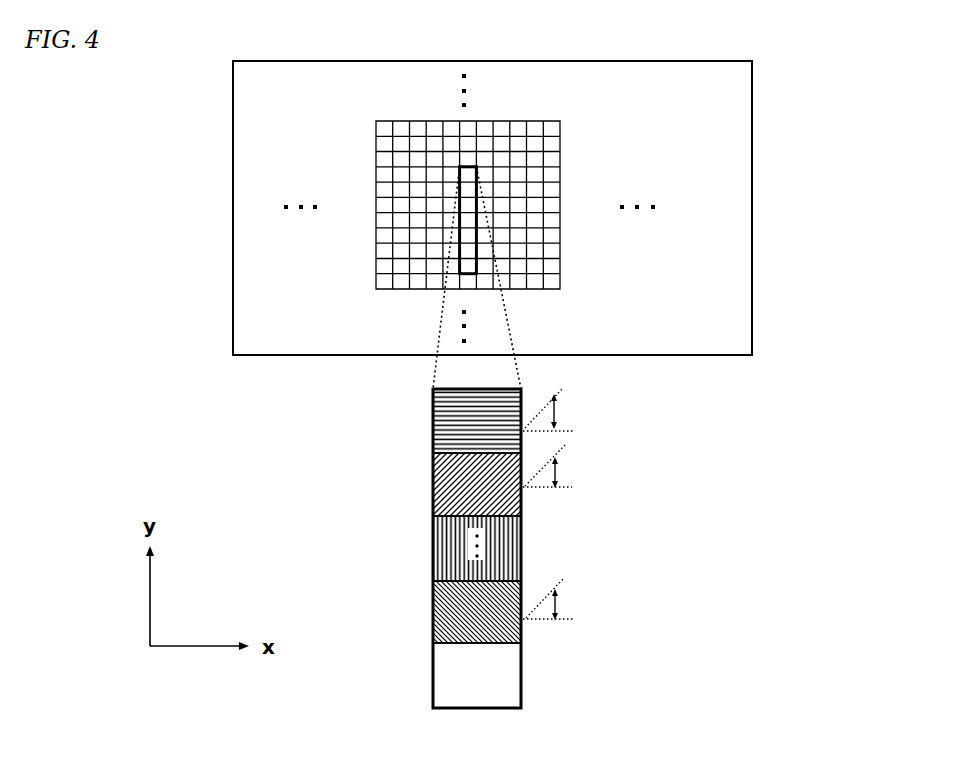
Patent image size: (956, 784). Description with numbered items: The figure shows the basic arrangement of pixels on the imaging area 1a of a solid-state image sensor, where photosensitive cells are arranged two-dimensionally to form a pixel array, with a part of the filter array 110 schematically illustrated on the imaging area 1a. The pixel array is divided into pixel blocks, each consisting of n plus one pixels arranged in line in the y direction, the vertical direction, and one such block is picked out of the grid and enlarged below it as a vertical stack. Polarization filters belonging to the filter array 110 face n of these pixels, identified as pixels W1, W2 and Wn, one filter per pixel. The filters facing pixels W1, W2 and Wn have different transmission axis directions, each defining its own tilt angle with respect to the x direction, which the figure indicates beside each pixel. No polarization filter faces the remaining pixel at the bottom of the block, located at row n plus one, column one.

The imaging area 1a is at (555, 208).
The filter array 110 is at (518, 198).
The pixel W1 is at (477, 421).
The pixel W2 is at (477, 484).
The pixel Wn is at (477, 612).